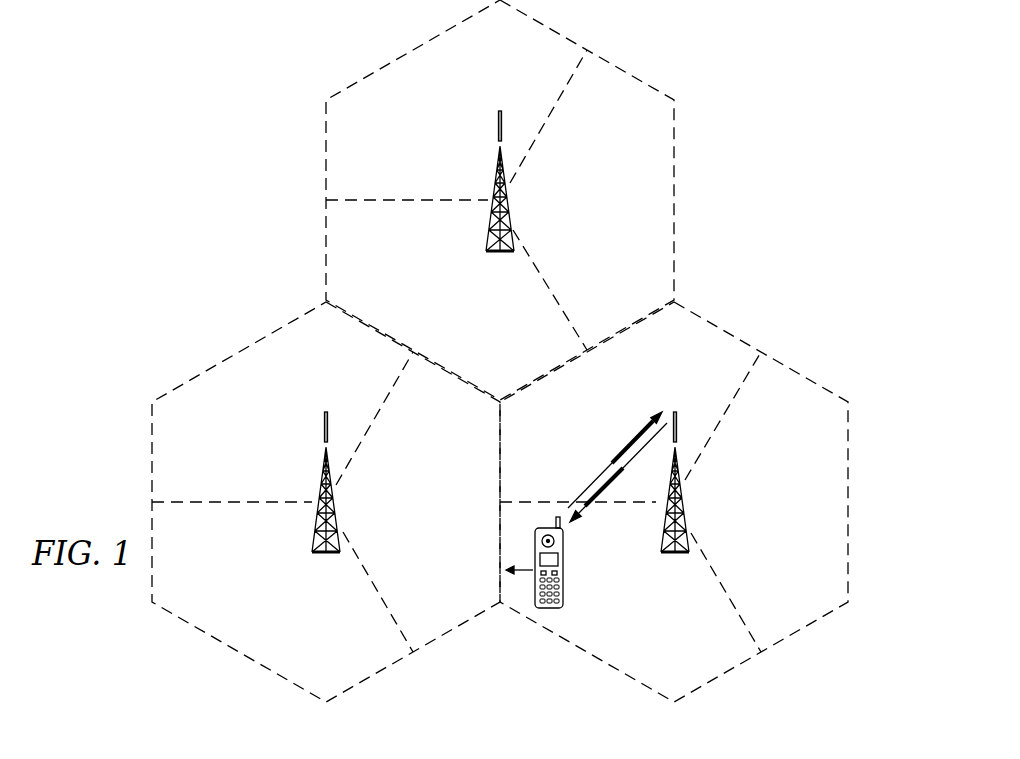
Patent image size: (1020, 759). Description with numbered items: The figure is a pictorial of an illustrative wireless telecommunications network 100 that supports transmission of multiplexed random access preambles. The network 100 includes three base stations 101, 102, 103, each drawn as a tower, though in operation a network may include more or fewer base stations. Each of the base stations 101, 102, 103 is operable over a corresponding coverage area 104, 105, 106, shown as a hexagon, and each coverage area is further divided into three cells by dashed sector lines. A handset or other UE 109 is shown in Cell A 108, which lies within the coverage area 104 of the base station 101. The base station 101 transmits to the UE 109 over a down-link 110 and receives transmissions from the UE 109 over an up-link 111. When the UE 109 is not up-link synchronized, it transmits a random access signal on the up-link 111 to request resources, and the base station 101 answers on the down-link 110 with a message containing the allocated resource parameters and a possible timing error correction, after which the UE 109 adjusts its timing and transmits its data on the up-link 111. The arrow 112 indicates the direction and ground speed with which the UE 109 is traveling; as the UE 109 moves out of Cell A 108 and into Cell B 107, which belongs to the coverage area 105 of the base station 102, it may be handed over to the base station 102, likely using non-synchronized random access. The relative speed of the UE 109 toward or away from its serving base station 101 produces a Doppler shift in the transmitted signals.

The wireless telecommunications network 100 is at (742, 61).
The base station 101 is at (687, 512).
The base station 102 is at (324, 463).
The base station 103 is at (498, 165).
The coverage area 104 is at (793, 637).
The coverage area 105 is at (240, 653).
The coverage area 106 is at (676, 200).
The Cell B 107 is at (458, 602).
The Cell A 108 is at (678, 662).
The UE 109 is at (565, 578).
The down-link 110 is at (597, 497).
The up-link 111 is at (622, 448).
The direction and ground speed of UE 112 is at (527, 574).